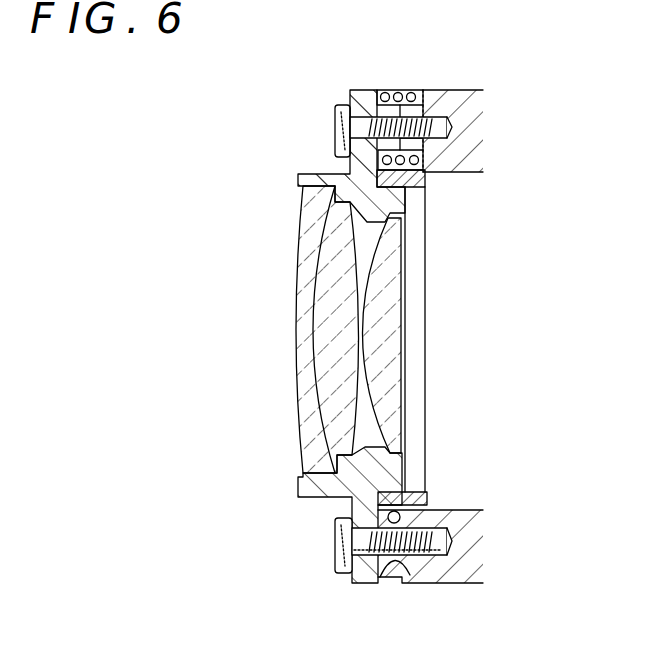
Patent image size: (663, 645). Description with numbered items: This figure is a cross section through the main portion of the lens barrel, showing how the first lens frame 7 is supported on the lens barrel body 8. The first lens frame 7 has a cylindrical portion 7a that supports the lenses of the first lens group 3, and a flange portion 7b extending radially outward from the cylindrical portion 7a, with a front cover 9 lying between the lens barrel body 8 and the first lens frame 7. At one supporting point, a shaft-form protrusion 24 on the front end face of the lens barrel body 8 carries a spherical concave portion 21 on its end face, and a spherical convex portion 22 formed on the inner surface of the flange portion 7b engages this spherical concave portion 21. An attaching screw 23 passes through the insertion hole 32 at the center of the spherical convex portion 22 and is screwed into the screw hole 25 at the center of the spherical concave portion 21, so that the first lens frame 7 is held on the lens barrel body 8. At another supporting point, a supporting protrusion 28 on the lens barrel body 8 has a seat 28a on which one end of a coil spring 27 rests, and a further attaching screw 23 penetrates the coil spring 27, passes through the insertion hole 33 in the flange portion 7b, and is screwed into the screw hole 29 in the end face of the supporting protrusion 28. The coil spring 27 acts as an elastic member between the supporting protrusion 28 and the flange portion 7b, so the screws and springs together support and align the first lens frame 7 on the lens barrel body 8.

The first lens group 3 is at (268, 340).
The first lens frame 7 is at (303, 490).
The cylindrical portion 7a is at (318, 178).
The flange portion 7b is at (362, 98).
The lens barrel body 8 is at (470, 92).
The front cover 9 is at (423, 183).
The spherical concave portion 21 is at (425, 503).
The spherical convex portion 22 is at (382, 570).
The attaching screw 23 is at (336, 125).
The shaft-form protrusion 24 is at (413, 573).
The screw hole 25 is at (452, 541).
The coil spring 27 is at (392, 94).
The supporting protrusion 28 is at (404, 110).
The seat 28a is at (414, 92).
The screw hole 29 is at (452, 127).
The insertion hole 32 is at (336, 553).
The insertion hole 33 is at (349, 113).